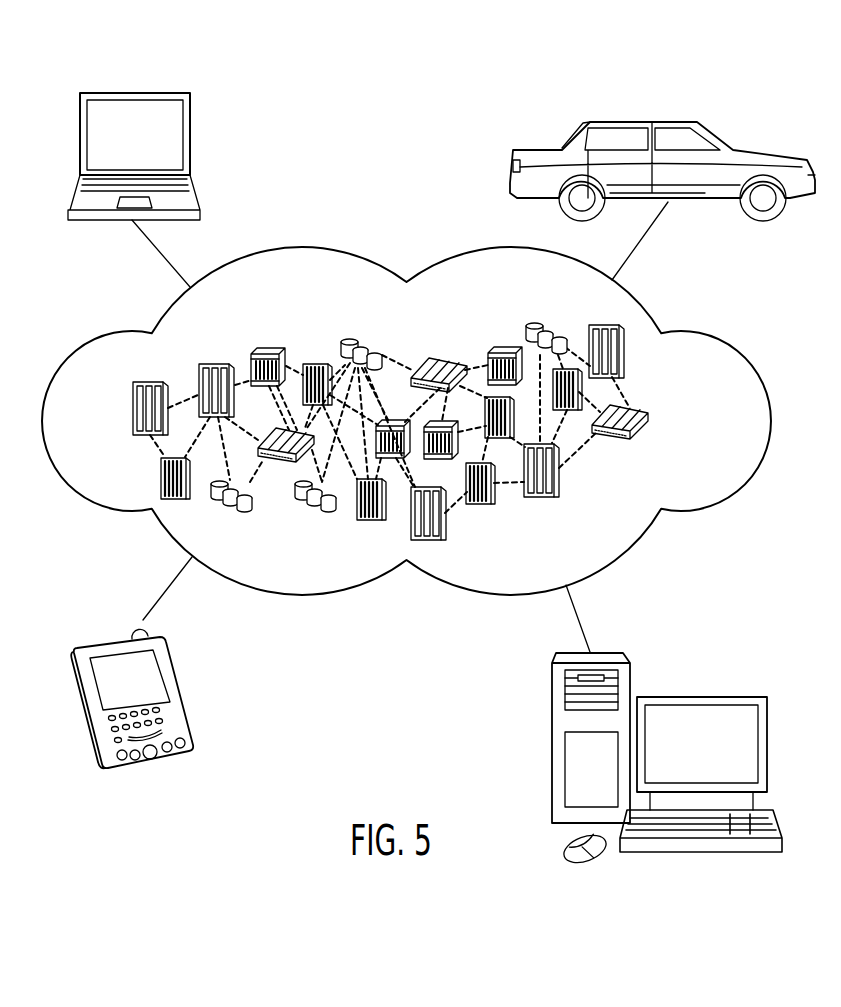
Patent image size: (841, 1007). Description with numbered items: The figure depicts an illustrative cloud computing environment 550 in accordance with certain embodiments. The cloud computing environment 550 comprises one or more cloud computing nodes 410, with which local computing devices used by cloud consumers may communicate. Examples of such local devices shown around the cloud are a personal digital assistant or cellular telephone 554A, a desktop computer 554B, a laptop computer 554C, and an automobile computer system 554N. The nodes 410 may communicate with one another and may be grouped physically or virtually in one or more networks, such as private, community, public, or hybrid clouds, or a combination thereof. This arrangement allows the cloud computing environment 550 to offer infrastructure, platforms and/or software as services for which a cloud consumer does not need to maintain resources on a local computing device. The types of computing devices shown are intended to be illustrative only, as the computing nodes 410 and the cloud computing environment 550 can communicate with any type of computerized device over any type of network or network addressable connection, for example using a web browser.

The cloud computing environment 550 is at (717, 338).
The cloud computing node 410 is at (664, 424).
The personal digital assistant or cellular telephone 554A is at (115, 637).
The desktop computer 554B is at (702, 695).
The laptop computer 554C is at (135, 92).
The automobile computer system 554N is at (642, 118).